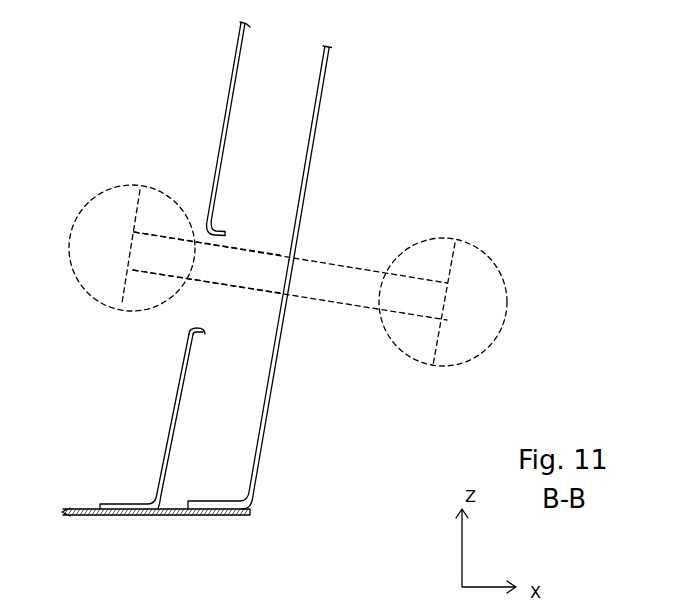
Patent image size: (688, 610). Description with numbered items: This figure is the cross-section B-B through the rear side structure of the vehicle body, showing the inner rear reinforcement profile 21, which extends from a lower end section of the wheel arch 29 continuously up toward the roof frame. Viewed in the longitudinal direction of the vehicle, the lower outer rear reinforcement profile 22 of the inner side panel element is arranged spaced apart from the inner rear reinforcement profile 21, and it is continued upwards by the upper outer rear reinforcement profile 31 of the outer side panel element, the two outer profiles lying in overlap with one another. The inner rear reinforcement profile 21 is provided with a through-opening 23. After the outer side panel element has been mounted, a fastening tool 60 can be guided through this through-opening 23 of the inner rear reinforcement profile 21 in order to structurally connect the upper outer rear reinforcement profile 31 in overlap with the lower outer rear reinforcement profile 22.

The inner rear reinforcement profile 21 is at (162, 430).
The lower outer rear reinforcement profile 22 is at (267, 397).
The through-opening 23 is at (186, 319).
The wheel arch 29 is at (175, 515).
The upper outer rear reinforcement profile 31 is at (310, 171).
The fastening tool 60 is at (230, 275).